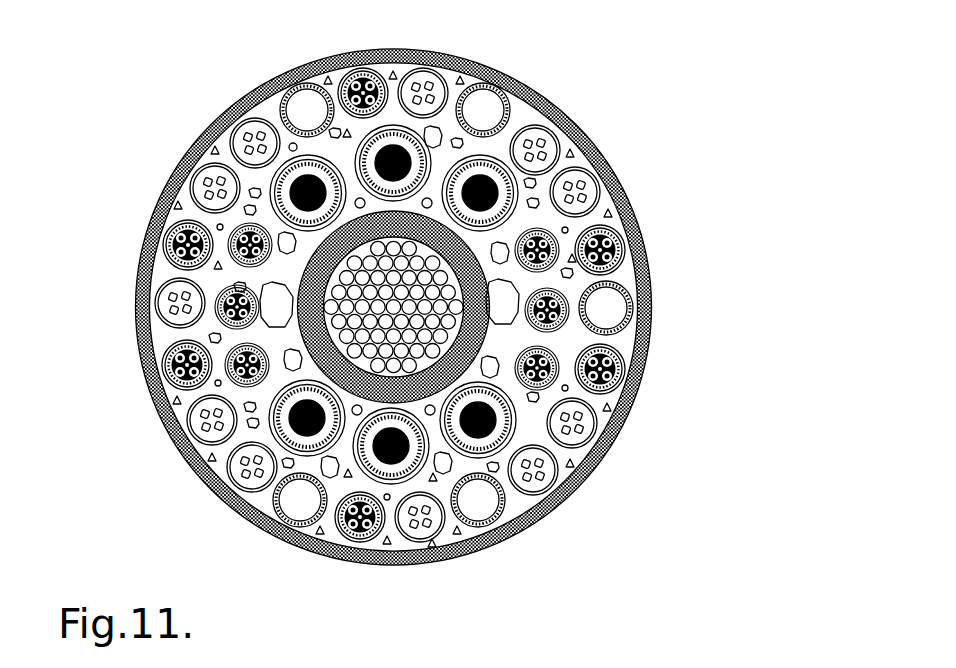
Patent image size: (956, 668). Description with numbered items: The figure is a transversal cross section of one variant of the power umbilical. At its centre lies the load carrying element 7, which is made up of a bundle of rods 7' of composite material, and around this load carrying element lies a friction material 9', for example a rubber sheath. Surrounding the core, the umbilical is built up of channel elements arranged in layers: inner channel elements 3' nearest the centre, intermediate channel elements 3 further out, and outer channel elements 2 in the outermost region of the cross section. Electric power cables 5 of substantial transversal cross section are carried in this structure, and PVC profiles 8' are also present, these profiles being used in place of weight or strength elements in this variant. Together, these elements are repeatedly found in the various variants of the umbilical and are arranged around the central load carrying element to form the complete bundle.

The outer channel elements 2 is at (619, 222).
The intermediate channel elements 3 is at (655, 258).
The inner channel elements 3' is at (624, 318).
The electric power cables 5 is at (403, 460).
The load carrying element 7 is at (492, 181).
The bundle of rods 7' is at (509, 368).
The PVC profiles 8' is at (618, 163).
The friction material 9' is at (276, 307).